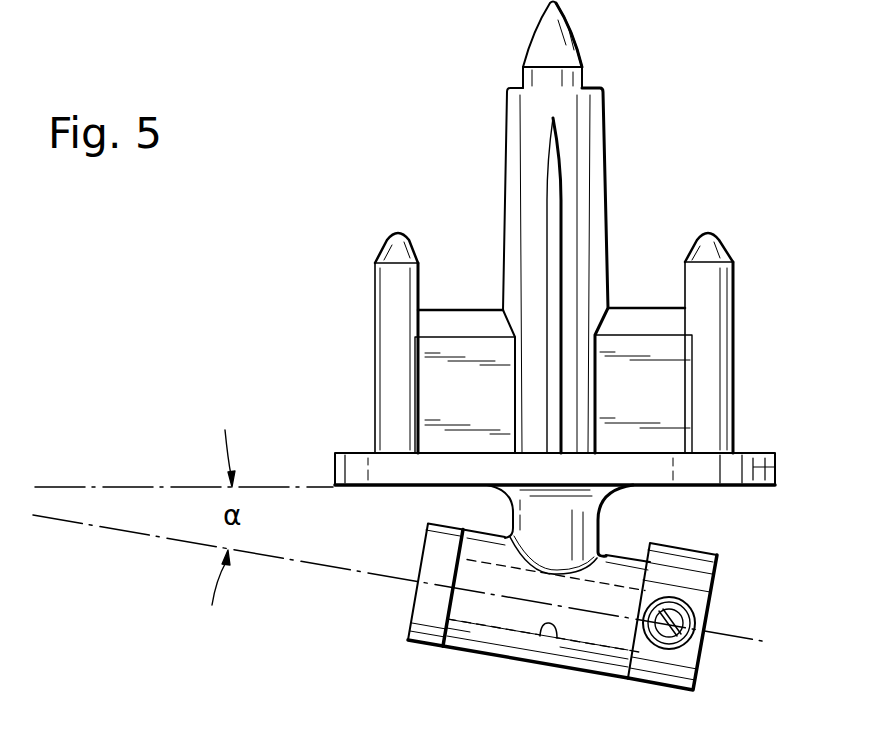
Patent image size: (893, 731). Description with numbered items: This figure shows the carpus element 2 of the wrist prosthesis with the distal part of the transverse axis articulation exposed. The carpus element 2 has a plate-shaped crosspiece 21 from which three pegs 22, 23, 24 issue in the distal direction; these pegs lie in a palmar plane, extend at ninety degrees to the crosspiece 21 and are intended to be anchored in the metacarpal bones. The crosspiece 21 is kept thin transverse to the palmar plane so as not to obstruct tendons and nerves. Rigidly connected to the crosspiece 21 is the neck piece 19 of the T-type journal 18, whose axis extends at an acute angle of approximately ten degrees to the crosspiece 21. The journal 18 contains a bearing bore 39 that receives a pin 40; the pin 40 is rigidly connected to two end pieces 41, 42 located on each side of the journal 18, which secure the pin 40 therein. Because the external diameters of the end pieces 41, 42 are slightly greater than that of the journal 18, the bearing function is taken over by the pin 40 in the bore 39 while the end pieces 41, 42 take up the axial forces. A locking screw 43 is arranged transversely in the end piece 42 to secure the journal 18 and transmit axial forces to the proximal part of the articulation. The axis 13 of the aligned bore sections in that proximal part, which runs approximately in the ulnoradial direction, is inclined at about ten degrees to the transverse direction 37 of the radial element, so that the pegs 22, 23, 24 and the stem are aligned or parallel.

The carpus element 2 is at (434, 143).
The axis 13 is at (157, 537).
The T-type journal 18 is at (477, 640).
The neck piece 19 is at (580, 521).
The crosspiece 21 is at (777, 473).
The peg 22 is at (393, 277).
The peg 23 is at (541, 76).
The peg 24 is at (713, 300).
The transverse direction 37 is at (157, 485).
The bearing bore 39 is at (546, 633).
The pin 40 is at (610, 630).
The end piece 41 is at (420, 622).
The end piece 42 is at (685, 670).
The locking screw 43 is at (700, 613).